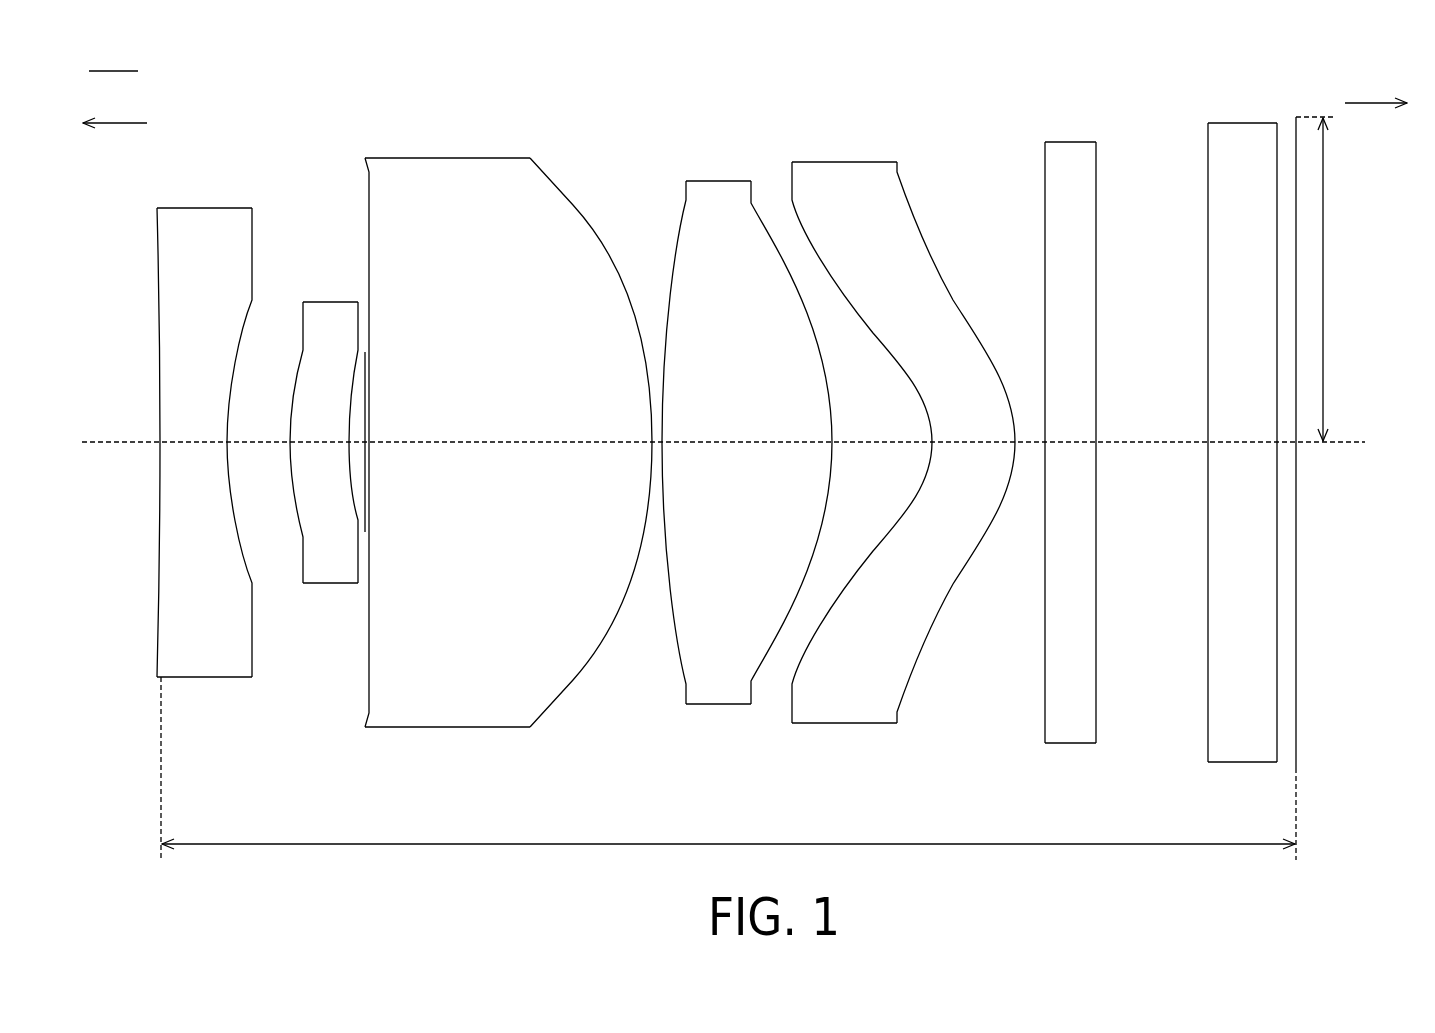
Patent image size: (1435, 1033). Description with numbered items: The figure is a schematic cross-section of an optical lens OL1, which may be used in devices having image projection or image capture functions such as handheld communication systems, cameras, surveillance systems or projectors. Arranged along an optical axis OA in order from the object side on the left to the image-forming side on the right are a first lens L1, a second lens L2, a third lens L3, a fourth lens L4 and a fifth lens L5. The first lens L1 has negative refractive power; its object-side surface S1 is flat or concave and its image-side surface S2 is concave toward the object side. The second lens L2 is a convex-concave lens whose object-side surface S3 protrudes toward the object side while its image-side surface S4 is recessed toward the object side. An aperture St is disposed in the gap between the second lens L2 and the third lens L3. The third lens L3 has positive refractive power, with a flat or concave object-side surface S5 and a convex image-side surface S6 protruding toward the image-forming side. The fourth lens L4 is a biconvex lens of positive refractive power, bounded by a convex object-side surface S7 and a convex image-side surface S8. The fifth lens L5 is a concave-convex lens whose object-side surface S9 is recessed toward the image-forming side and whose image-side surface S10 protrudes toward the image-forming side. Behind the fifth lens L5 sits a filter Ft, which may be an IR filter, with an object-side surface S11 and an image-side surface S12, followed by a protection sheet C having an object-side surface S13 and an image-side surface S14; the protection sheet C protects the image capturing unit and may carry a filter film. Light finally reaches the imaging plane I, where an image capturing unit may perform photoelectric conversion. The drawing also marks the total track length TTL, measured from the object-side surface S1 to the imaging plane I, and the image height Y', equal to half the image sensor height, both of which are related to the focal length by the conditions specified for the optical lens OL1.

The optical lens OL1 is at (745, 81).
The first lens L1 is at (199, 473).
The second lens L2 is at (337, 478).
The third lens L3 is at (485, 459).
The fourth lens L4 is at (728, 450).
The fifth lens L5 is at (903, 479).
The aperture St is at (364, 470).
The filter Ft is at (1065, 477).
The protection sheet C is at (1236, 448).
The imaging plane I is at (1297, 740).
The optical axis OA is at (741, 442).
The distance from the object-side surface of the first lens to the imaging plane TTL is at (728, 779).
The image height Y' is at (1325, 279).
The object-side surface of the first lens S1 is at (158, 283).
The image-side surface of the first lens S2 is at (248, 318).
The object-side surface of the second lens S3 is at (297, 368).
The image-side surface of the second lens S4 is at (356, 387).
The object-side surface of the third lens S5 is at (368, 323).
The image-side surface of the third lens S6 is at (573, 205).
The object-side surface of the fourth lens S7 is at (672, 255).
The image-side surface of the fourth lens S8 is at (773, 243).
The object-side surface of the fifth lens S9 is at (840, 290).
The image-side surface of the fifth lens S10 is at (925, 255).
The object-side surface of the filter S11 is at (1045, 238).
The image-side surface of the filter S12 is at (1096, 235).
The object-side surface of the protection sheet S13 is at (1208, 208).
The image-side surface of the protection sheet S14 is at (1277, 175).